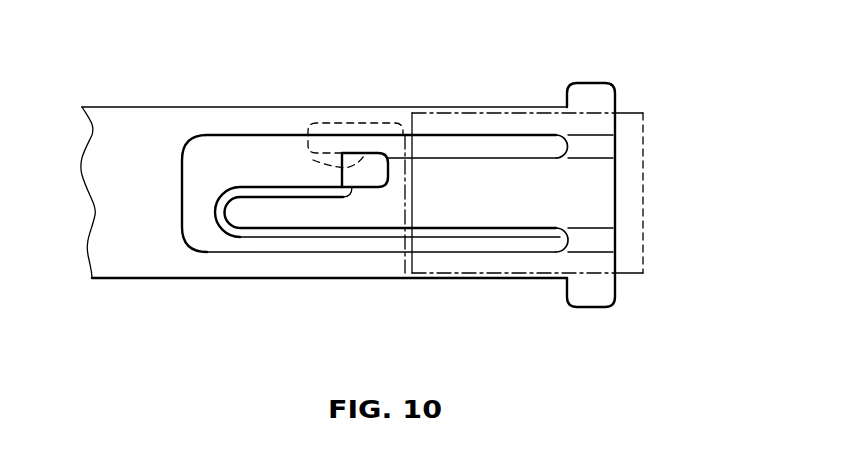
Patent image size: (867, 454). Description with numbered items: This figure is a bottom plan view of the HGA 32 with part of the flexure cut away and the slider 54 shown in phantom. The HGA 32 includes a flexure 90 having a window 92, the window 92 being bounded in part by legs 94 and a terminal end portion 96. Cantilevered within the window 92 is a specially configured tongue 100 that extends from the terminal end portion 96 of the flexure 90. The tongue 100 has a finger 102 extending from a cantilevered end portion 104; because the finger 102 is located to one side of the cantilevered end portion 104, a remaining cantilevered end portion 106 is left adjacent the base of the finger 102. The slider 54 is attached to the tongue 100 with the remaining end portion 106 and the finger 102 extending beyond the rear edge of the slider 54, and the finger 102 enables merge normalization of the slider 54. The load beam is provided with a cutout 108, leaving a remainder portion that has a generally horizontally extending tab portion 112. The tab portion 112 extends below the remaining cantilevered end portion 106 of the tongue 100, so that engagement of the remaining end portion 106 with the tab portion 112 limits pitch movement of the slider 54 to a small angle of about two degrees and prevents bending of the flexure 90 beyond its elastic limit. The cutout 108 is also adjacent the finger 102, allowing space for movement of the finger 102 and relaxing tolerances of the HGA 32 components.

The HGA 32 is at (605, 50).
The slider 54 is at (643, 258).
The flexure 90 is at (130, 127).
The window 92 is at (226, 144).
The legs 94 is at (330, 112).
The terminal end portion 96 is at (588, 192).
The tongue 100 is at (528, 210).
The finger 102 is at (262, 217).
The cantilevered end portion 104 is at (313, 160).
The remaining cantilevered end portion 106 is at (388, 172).
The cutout 108 is at (363, 130).
The tab portion 112 is at (363, 152).